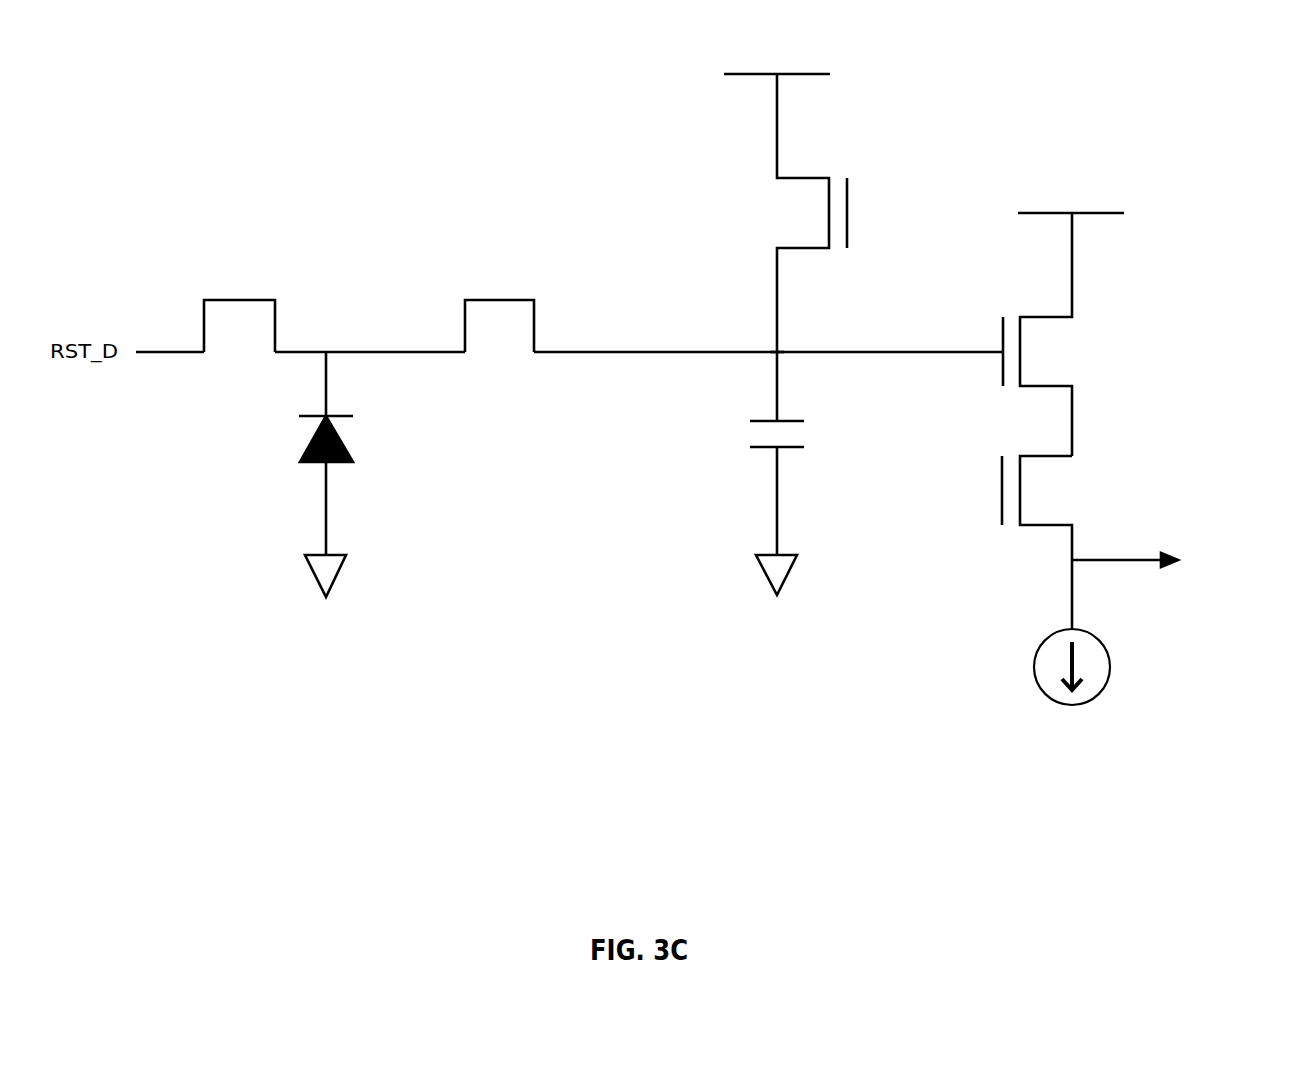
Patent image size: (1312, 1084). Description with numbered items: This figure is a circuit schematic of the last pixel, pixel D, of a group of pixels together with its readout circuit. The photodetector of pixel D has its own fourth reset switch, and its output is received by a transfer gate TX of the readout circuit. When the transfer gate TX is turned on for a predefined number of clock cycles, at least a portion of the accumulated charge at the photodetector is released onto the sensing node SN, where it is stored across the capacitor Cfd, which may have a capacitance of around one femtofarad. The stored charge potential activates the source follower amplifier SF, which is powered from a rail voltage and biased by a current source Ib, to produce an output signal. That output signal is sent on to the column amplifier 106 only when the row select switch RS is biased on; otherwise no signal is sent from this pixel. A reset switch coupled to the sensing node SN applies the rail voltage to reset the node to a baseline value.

The column amplifier 106 is at (1163, 534).
The sensing node SN is at (777, 352).
The capacitor Cfd is at (785, 473).
The source follower amplifier SF is at (1063, 318).
The row select switch RS is at (1018, 542).
The current source Ib is at (1083, 667).
The transfer gate TX is at (536, 282).